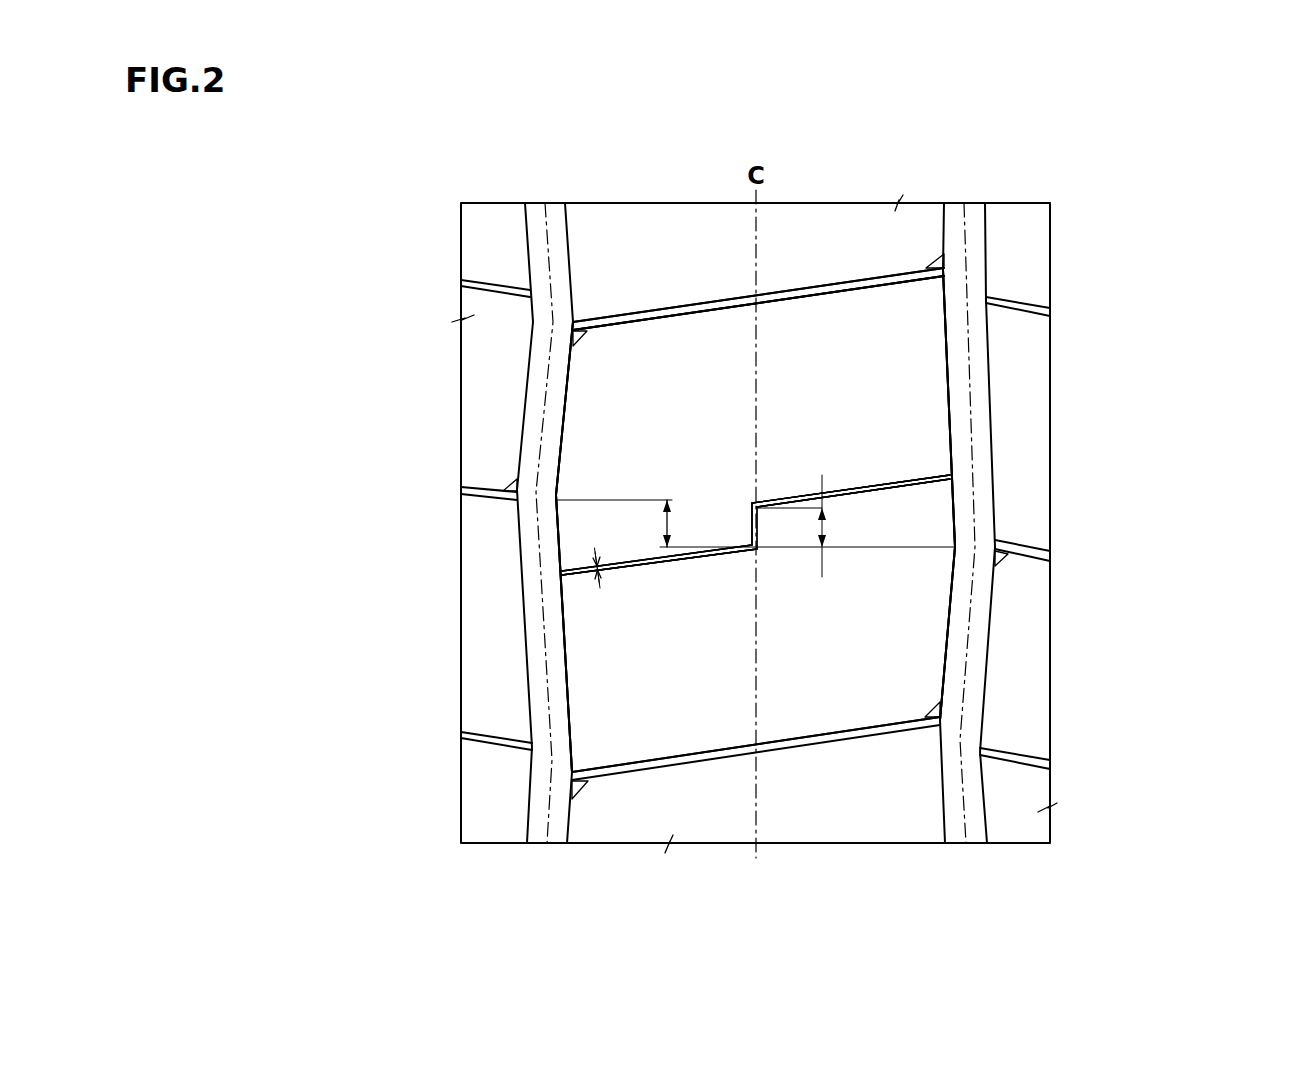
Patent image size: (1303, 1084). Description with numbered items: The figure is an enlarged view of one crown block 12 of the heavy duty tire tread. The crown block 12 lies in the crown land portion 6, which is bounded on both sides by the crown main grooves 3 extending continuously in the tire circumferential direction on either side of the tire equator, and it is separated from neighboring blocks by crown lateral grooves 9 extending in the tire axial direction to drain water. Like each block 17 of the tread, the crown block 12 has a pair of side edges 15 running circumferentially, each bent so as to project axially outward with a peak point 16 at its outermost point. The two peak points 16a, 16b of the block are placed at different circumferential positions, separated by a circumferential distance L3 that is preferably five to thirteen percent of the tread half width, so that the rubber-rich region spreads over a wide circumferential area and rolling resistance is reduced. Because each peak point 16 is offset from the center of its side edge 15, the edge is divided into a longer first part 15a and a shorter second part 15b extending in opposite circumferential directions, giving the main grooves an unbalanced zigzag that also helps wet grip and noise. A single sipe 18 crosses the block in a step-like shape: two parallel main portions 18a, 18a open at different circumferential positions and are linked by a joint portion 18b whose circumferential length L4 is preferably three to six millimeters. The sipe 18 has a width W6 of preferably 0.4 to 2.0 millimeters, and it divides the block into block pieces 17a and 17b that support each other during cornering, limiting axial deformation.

The crown main groove 3 is at (540, 235).
The crown land portion 6 is at (666, 240).
The crown lateral groove 9 is at (825, 285).
The crown block 12 is at (901, 423).
The side edge 15 is at (770, 521).
The first part 15a is at (563, 617).
The second part 15b is at (560, 452).
The peak point 16 is at (764, 525).
The peak point 16a is at (558, 500).
The peak point 16b is at (955, 547).
The block 17 is at (901, 423).
The divided block piece 17a is at (895, 522).
The divided block piece 17b is at (822, 387).
The sipe 18 is at (756, 713).
The main portion 18a is at (707, 552).
The joint portion 18b is at (758, 520).
The circumferential distance L3 is at (755, 523).
The circumferential length L4 is at (805, 526).
The width W6 is at (621, 572).